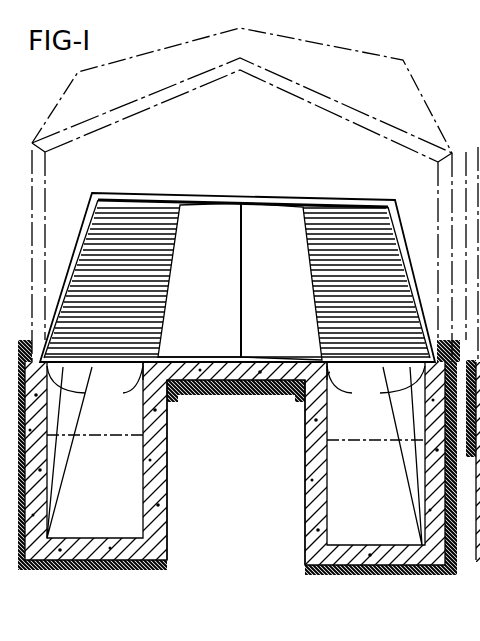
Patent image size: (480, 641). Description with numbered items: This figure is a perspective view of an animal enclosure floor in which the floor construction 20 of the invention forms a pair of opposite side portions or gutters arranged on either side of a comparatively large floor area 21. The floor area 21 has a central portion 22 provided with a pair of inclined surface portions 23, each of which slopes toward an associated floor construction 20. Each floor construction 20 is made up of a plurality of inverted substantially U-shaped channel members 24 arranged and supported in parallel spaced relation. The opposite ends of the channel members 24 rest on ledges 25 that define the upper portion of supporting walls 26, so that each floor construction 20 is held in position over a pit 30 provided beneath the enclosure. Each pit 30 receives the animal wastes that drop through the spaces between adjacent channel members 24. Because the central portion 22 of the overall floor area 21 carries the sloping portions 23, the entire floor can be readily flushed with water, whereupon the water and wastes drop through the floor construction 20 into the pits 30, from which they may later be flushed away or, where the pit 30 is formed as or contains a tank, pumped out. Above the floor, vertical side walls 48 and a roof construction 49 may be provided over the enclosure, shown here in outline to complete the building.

The floor construction 20 is at (172, 160).
The floor area 21 is at (228, 192).
The central portion 22 is at (252, 212).
The inclined surface portions 23 is at (220, 287).
The channel members 24 is at (162, 329).
The ledges 25 is at (236, 455).
The supporting walls 26 is at (43, 493).
The pit 30 is at (100, 523).
The side walls 48 is at (45, 172).
The roof construction 49 is at (402, 92).